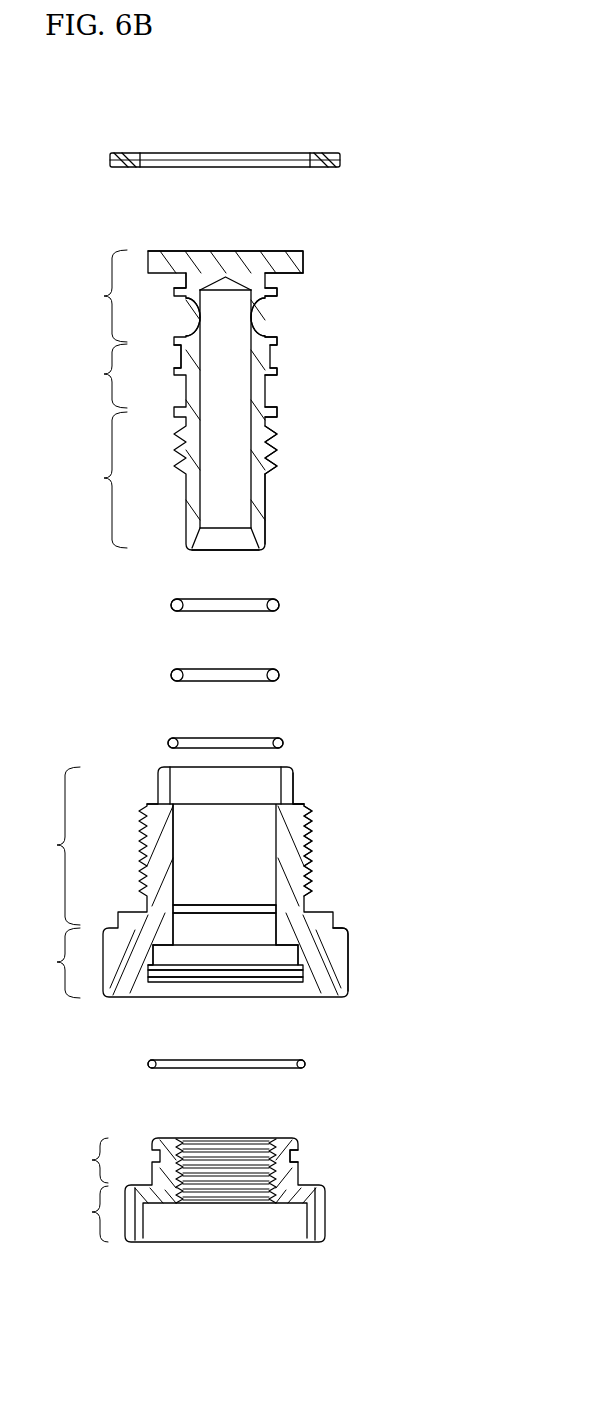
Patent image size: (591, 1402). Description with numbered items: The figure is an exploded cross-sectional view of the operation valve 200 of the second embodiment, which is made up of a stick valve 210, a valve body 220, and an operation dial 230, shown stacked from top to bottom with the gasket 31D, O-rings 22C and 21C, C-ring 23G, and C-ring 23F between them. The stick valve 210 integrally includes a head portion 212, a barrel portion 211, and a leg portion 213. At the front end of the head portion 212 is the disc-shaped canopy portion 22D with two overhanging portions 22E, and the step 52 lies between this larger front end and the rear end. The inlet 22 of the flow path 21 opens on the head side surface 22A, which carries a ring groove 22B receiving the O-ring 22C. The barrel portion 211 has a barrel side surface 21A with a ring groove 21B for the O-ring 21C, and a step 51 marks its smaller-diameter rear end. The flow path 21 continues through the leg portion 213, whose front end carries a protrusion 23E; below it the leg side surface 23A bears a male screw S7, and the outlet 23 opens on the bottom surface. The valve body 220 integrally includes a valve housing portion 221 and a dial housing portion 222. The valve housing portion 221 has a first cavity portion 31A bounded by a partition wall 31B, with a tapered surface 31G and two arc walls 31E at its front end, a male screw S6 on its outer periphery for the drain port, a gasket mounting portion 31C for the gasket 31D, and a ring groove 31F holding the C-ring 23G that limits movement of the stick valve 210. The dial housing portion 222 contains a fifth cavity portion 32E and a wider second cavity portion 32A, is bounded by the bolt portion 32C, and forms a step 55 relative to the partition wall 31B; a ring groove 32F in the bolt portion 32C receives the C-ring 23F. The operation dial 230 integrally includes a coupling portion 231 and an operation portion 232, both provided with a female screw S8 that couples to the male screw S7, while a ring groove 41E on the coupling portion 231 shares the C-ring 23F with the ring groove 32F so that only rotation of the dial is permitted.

The operation valve 200 is at (257, 132).
The gasket 31D is at (341, 160).
The stick valve 210 is at (133, 228).
The canopy portion 22D is at (235, 250).
The overhanging portion 22E is at (301, 254).
The head portion 212 is at (91, 296).
The step 52 is at (183, 282).
The ring groove 22B is at (276, 276).
The head side surface 22A is at (273, 293).
The inlet 22 is at (190, 320).
The barrel portion 211 is at (91, 376).
The step 51 is at (180, 376).
The ring groove 21B is at (273, 358).
The barrel side surface 21A is at (279, 372).
The leg portion 213 is at (91, 480).
The protrusion 23E is at (278, 411).
The flow path 21 is at (213, 452).
The male screw S7 is at (277, 452).
The leg side surface 23A is at (269, 488).
The outlet 23 is at (214, 546).
The O-ring 22C is at (280, 607).
The O-ring 21C is at (280, 677).
The valve body 220 is at (143, 750).
The C-ring 23G is at (284, 742).
The tapered surface 31G is at (281, 797).
The arc wall 31E is at (180, 790).
The partition wall 31B is at (291, 808).
The valve housing portion 221 is at (47, 846).
The first cavity portion 31A is at (201, 843).
The male screw S6 is at (313, 840).
The ring groove 31F is at (174, 910).
The gasket mounting portion 31C is at (286, 938).
The dial housing portion 222 is at (47, 963).
The fifth cavity portion 32E is at (272, 940).
The second cavity portion 32A is at (284, 960).
The bolt portion 32C is at (339, 978).
The step 55 is at (156, 953).
The ring groove 32F is at (228, 970).
The C-ring 23F is at (304, 1067).
The operation dial 230 is at (122, 1262).
The female screw S8 is at (181, 1145).
The coupling portion 231 is at (80, 1160).
The operation portion 232 is at (80, 1214).
The ring groove 41E is at (292, 1158).